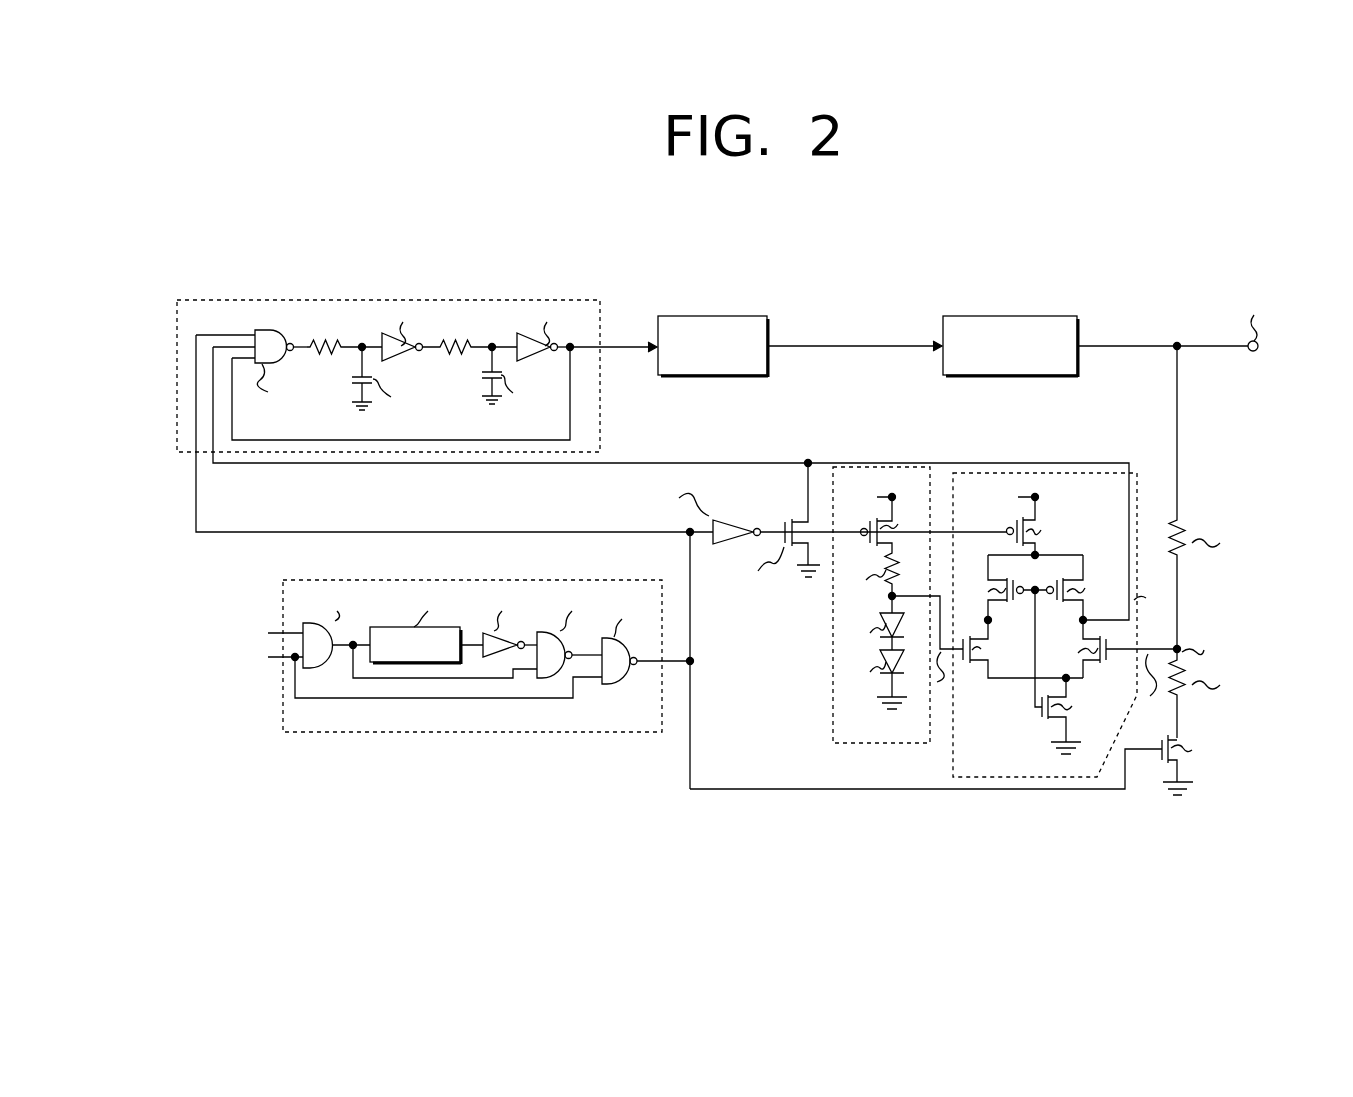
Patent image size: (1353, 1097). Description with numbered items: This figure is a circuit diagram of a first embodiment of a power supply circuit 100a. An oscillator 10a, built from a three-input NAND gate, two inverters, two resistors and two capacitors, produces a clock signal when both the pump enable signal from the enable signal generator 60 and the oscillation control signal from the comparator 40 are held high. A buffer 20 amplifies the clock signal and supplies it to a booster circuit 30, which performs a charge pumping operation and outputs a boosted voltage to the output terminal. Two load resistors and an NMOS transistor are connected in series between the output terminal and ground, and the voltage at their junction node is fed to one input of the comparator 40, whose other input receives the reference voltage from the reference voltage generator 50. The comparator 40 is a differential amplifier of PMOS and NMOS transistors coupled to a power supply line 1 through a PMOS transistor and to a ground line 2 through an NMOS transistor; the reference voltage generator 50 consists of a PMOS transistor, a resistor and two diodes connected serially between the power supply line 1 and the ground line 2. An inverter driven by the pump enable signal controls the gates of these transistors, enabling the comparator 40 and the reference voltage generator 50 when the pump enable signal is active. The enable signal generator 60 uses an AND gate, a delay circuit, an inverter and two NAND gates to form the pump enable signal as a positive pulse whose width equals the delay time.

The power supply circuit 100a is at (245, 241).
The oscillator 10a is at (441, 309).
The buffer 20 is at (714, 315).
The booster circuit 30 is at (1011, 315).
The comparator 40 is at (1012, 778).
The reference voltage generator 50 is at (829, 686).
The enable signal generator 60 is at (488, 734).
The power supply line 1 is at (898, 497).
The ground line 2 is at (365, 402).